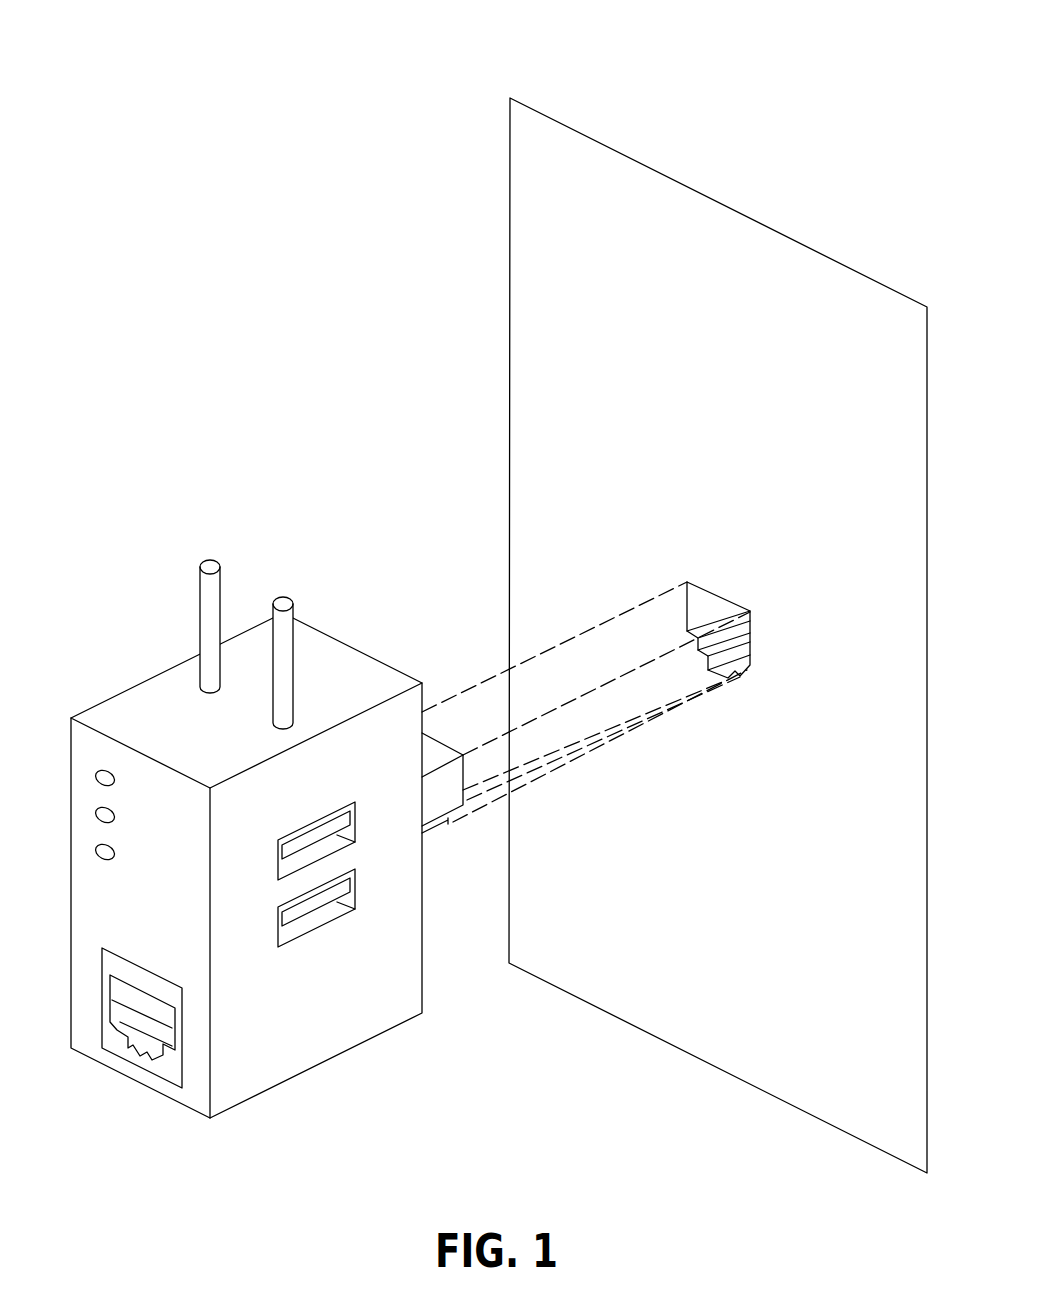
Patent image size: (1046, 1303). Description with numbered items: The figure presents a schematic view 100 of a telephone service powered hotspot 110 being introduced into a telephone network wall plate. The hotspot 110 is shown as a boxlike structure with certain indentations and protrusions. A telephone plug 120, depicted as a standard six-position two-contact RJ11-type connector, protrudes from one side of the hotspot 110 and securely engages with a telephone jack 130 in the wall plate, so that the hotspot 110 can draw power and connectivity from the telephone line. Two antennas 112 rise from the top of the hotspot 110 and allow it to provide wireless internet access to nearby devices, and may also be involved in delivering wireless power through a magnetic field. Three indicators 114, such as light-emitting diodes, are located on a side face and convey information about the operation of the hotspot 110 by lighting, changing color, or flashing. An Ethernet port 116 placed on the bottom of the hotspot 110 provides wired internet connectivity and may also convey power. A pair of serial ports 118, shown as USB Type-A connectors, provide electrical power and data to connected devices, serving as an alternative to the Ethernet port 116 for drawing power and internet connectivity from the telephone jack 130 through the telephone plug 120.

The schematic view 100 is at (267, 90).
The telephone service powered hotspot 110 is at (163, 700).
The antennas 112 is at (305, 597).
The indicators 114 is at (118, 762).
The Ethernet port 116 is at (140, 1053).
The serial ports 118 is at (358, 795).
The telephone plug 120 is at (433, 833).
The telephone jack 130 is at (720, 593).